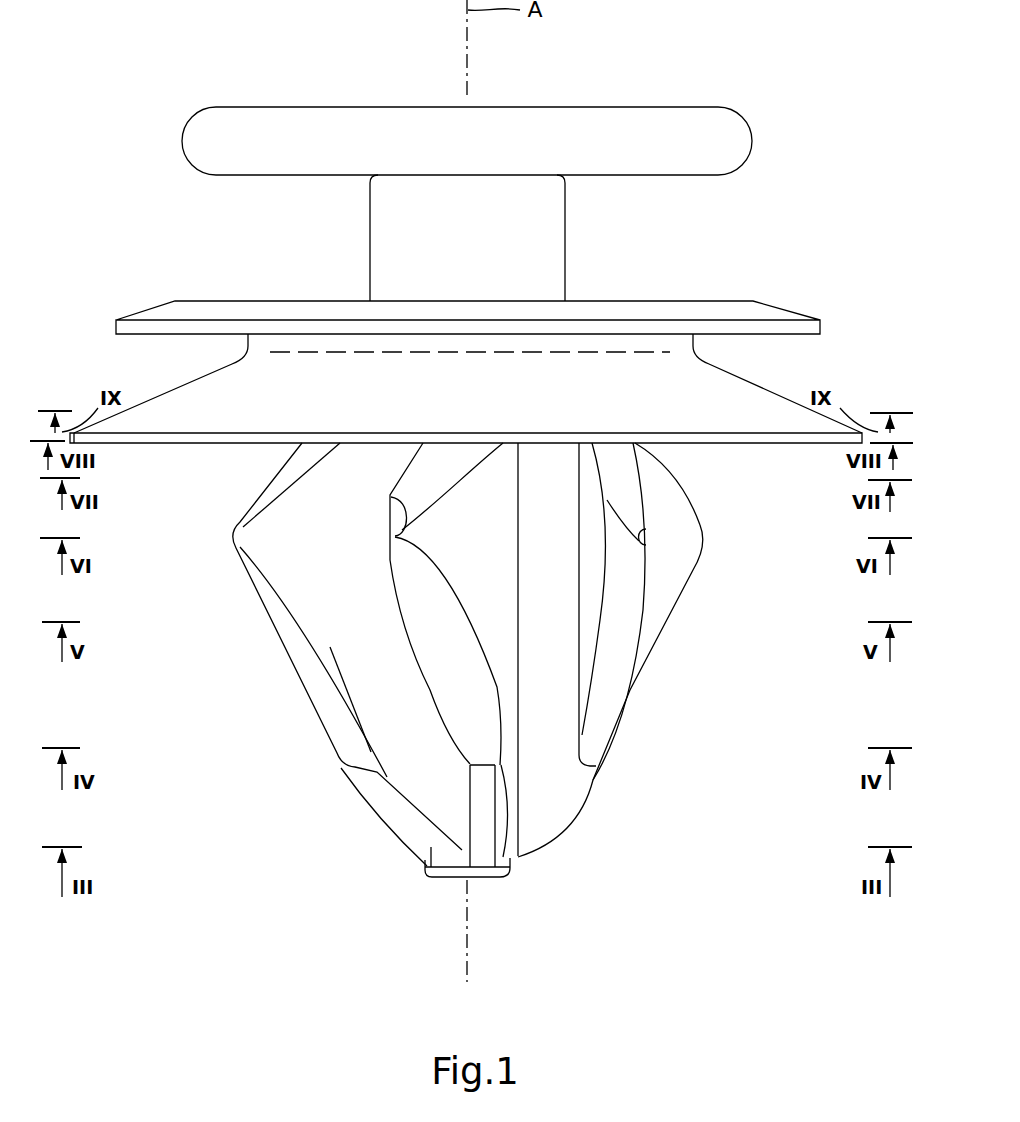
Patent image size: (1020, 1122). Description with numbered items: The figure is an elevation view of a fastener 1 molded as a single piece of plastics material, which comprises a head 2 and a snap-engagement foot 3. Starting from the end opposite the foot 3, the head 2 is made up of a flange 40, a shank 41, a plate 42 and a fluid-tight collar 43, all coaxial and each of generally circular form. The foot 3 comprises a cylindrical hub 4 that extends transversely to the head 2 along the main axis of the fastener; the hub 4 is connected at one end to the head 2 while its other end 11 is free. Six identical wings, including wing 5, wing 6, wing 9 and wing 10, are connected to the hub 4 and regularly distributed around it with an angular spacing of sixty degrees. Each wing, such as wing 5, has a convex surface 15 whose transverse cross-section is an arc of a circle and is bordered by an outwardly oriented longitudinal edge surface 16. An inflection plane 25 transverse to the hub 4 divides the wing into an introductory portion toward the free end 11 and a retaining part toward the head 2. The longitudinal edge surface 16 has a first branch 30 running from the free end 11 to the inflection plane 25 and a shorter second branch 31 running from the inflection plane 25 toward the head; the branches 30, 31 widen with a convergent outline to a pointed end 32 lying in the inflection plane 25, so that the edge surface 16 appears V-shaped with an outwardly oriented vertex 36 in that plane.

The fastener 1 is at (312, 831).
The head 2 is at (712, 227).
The snap-engagement foot 3 is at (703, 567).
The hub 4 is at (481, 858).
The wing 5 is at (420, 703).
The wing 6 is at (298, 682).
The wing 9 is at (683, 487).
The wing 10 is at (652, 612).
The free end 11 is at (448, 877).
The convex surface 15 is at (284, 547).
The longitudinal edge surface 16 is at (283, 470).
The inflection plane 25 is at (62, 538).
The first branch 30 is at (420, 617).
The second branch 31 is at (311, 446).
The pointed end 32 is at (392, 502).
The vertex 36 is at (234, 532).
The flange 40 is at (296, 125).
The shank 41 is at (548, 214).
The plate 42 is at (251, 318).
The fluid-tight collar 43 is at (711, 398).